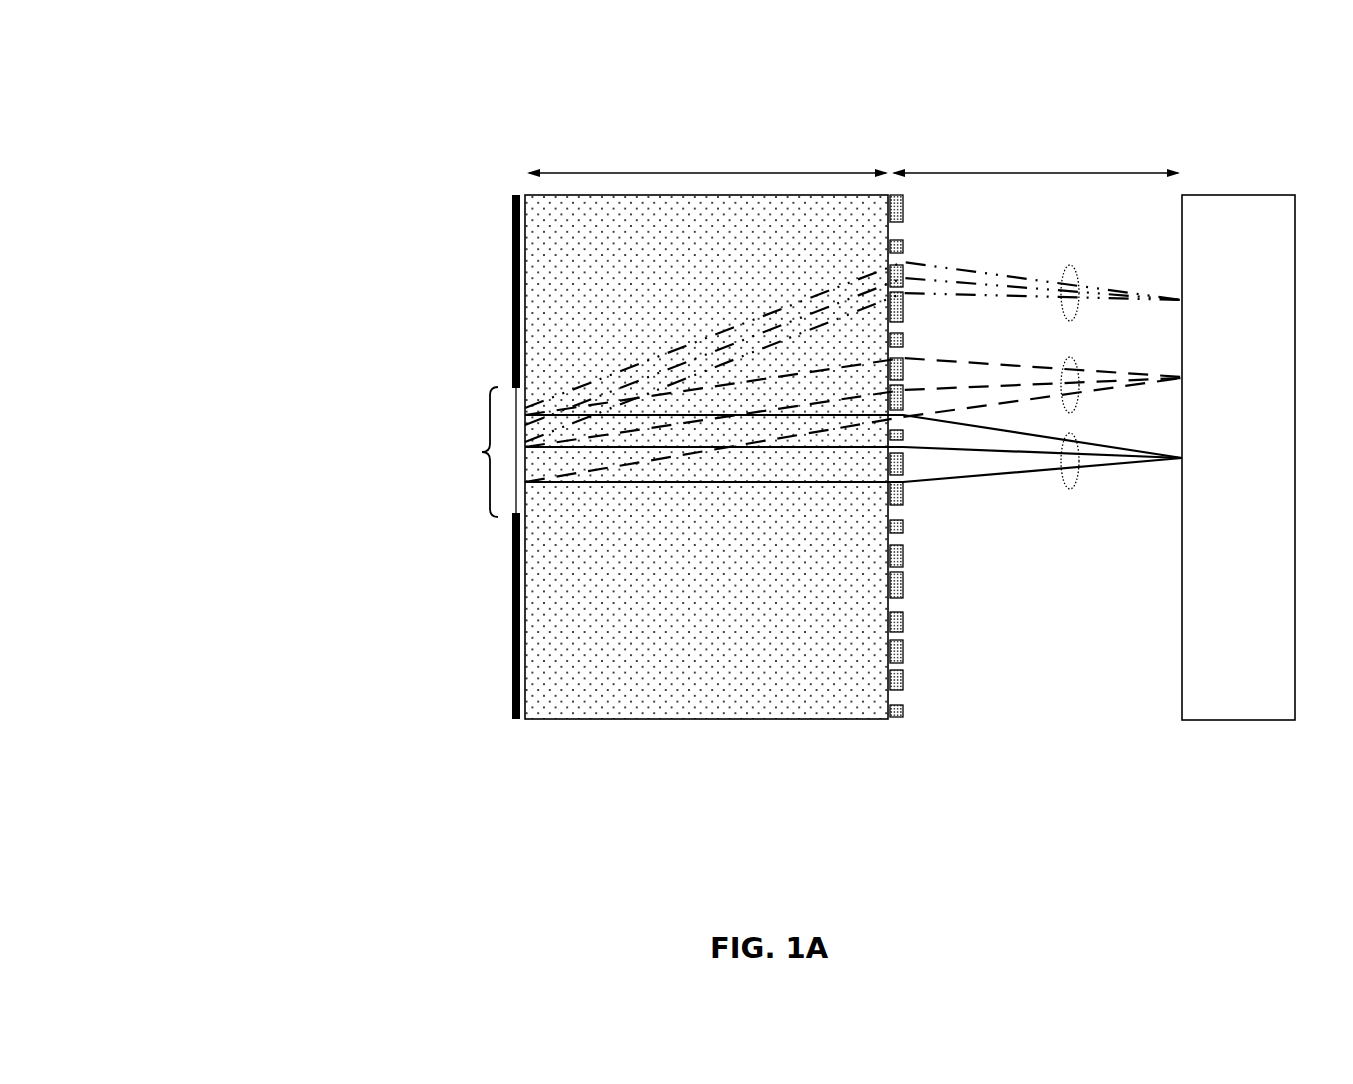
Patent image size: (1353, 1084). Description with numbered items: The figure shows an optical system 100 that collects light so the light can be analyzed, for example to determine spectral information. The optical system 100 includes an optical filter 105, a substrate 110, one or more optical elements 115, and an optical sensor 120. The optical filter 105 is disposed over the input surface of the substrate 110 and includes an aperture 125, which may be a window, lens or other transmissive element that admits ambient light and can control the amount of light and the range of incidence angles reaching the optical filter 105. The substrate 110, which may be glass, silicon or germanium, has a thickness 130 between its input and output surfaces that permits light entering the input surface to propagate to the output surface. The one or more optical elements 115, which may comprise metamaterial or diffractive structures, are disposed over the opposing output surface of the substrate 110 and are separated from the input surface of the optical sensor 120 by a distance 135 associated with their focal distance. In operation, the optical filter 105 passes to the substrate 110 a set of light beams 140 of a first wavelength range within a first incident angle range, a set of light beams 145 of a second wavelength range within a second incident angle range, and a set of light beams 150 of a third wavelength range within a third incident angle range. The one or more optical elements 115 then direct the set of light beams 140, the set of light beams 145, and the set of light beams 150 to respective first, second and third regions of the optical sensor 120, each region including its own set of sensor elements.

The optical system 100 is at (284, 66).
The optical filter 105 is at (522, 724).
The substrate 110 is at (717, 702).
The optical elements 115 is at (907, 721).
The optical sensor 120 is at (1250, 685).
The aperture 125 is at (477, 450).
The thickness 130 is at (707, 162).
The distance 135 is at (1036, 162).
The set of light beams 140 is at (1084, 484).
The set of light beams 145 is at (1084, 411).
The set of light beams 150 is at (1084, 319).